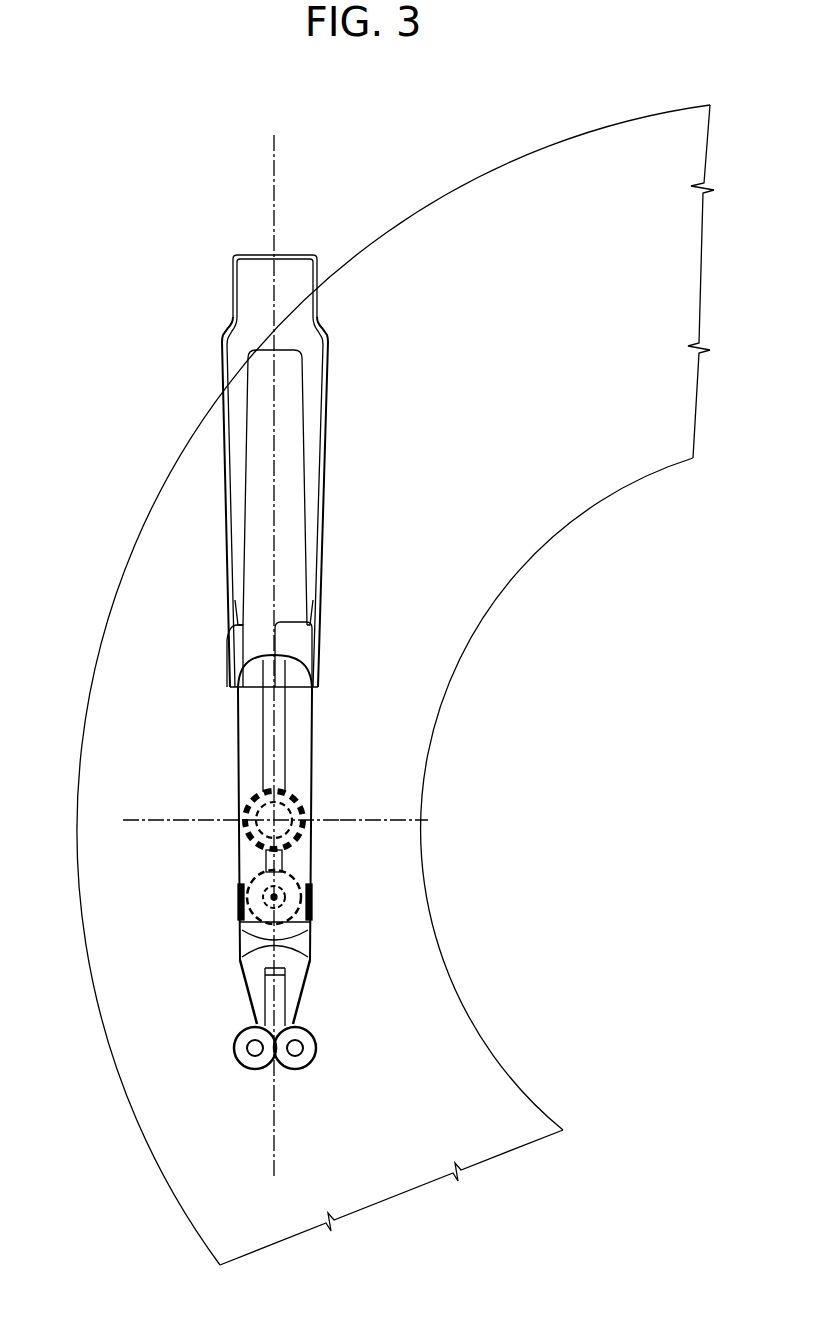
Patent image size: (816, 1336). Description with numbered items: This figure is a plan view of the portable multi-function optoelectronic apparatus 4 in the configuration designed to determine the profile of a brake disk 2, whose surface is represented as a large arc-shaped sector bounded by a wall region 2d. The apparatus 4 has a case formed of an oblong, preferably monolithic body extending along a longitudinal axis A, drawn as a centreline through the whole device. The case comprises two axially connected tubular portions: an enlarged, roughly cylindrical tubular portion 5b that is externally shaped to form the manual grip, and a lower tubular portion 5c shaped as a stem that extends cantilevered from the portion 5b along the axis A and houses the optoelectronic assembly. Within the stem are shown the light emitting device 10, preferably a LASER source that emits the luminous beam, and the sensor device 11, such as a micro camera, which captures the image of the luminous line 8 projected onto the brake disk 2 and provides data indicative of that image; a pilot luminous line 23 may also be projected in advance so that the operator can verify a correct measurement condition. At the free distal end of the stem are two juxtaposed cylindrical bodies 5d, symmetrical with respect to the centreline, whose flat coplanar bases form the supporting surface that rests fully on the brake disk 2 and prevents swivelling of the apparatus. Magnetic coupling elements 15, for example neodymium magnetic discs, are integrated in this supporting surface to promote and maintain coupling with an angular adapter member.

The longitudinal axis A is at (273, 161).
The brake disk 2 is at (477, 603).
The housing wall section 2d is at (190, 834).
The portable multi-function optoelectronic apparatus 4 is at (324, 667).
The tubular portion 5b is at (317, 428).
The tubular portion 5c is at (297, 718).
The luminous line 8 is at (428, 798).
The pilot luminous line 23 is at (383, 819).
The light emitting device 10 is at (300, 784).
The sensor device 11 is at (328, 897).
The cylindrical bodies 5d is at (232, 1072).
The magnetic coupling elements 15 is at (249, 1068).